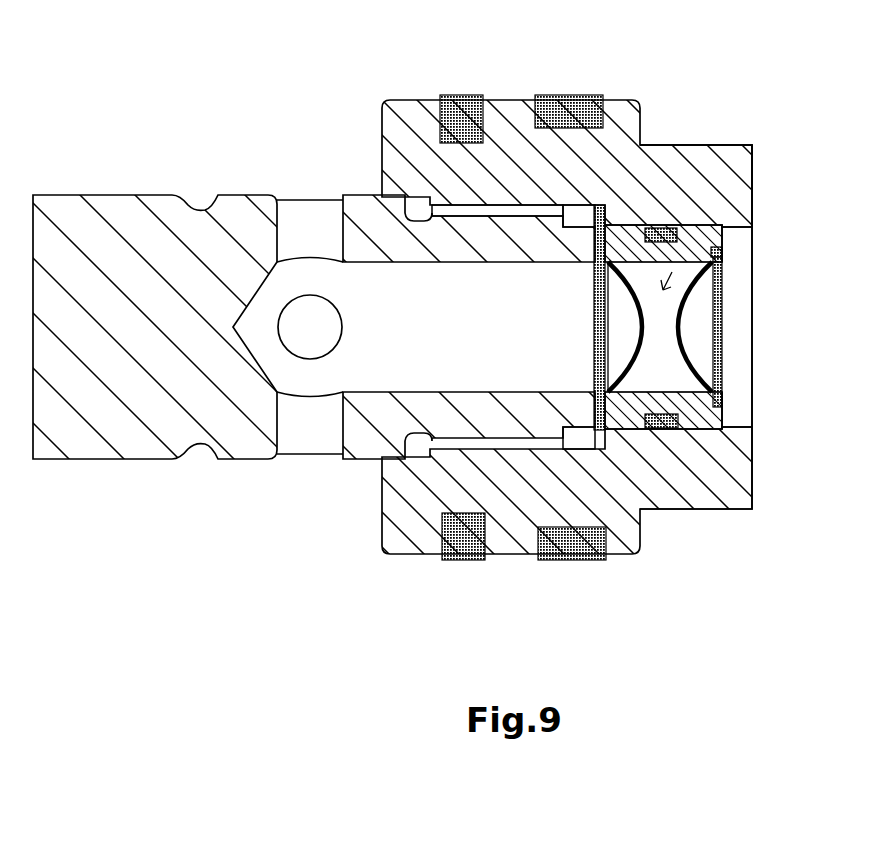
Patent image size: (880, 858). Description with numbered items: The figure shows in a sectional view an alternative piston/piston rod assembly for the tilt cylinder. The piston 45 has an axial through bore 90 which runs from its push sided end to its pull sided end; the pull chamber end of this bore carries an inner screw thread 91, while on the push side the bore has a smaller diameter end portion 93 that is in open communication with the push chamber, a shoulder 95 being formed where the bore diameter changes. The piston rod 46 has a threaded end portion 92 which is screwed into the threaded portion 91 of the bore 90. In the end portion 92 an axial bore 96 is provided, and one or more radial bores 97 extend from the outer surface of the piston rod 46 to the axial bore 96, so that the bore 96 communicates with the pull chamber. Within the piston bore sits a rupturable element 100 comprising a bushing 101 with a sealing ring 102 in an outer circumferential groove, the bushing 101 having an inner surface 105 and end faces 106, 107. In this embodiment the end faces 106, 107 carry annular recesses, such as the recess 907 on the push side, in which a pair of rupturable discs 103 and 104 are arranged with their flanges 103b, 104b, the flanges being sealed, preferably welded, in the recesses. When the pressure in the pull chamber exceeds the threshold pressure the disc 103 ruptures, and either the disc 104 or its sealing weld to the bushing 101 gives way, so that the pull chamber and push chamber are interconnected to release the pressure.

The piston rod 46 is at (134, 432).
The radial bores 97 is at (310, 330).
The axial bore 96 is at (458, 365).
The end portion 92 is at (388, 420).
The rupturable element 100 is at (731, 160).
The piston 45 is at (735, 178).
The inner screw thread 91 is at (450, 207).
The bushing 101 is at (640, 225).
The sealing ring 102 is at (665, 228).
The inner surface 105 is at (717, 430).
The end face 107 is at (700, 420).
The end face 106 is at (597, 240).
The rupturable disc 103 is at (641, 334).
The outer flange 103b is at (668, 385).
The rupturable disc 104 is at (723, 323).
The outer flange 104b is at (722, 247).
The shoulder 95 is at (722, 240).
The annular recess 907 is at (722, 397).
The through bore 90 is at (735, 285).
The end portion 93 is at (735, 367).